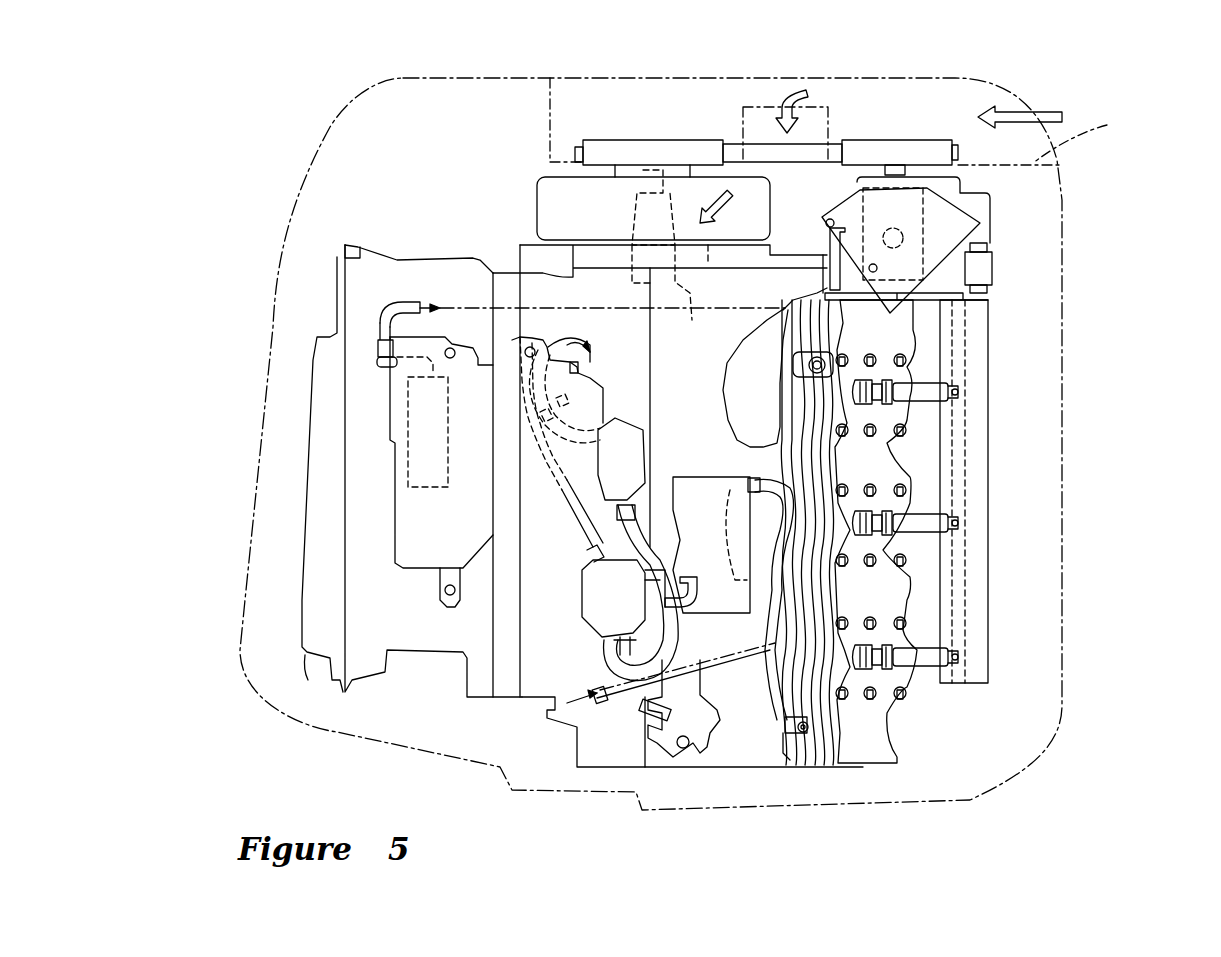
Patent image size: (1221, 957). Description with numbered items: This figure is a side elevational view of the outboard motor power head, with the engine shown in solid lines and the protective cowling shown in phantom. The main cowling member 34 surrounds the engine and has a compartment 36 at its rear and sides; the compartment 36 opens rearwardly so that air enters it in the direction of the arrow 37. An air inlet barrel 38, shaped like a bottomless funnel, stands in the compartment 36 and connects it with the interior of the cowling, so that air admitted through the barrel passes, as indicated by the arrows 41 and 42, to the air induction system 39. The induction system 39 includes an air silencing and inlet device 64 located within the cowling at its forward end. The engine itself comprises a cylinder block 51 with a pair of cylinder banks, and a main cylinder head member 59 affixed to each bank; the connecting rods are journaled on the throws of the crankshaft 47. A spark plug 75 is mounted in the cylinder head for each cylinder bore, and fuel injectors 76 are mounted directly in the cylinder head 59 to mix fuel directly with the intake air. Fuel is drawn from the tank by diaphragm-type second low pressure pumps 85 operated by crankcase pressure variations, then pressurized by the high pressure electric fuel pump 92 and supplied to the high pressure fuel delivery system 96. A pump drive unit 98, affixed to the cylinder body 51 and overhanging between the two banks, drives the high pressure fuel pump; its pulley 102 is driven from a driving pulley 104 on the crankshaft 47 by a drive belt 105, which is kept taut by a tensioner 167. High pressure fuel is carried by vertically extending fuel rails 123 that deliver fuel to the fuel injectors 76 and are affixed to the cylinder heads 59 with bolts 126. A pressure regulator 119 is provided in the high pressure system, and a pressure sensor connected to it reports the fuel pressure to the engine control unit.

The main cowling member 34 is at (1062, 373).
The compartments 36 is at (1081, 131).
The arrow 37 is at (1050, 110).
The air inlet barrel 38 is at (743, 107).
The air induction system 39 is at (447, 246).
The arrow 41 is at (797, 88).
The arrow 42 is at (730, 217).
The crankshaft 47 is at (581, 407).
The cylinder block 51 is at (767, 772).
The main cylinder head member 59 is at (887, 772).
The air silencing and inlet device 64 is at (319, 482).
The spark plug 75 is at (887, 667).
The fuel injector 76 is at (920, 647).
The second low pressure pumps 85 is at (643, 430).
The high pressure electric fuel pump 92 is at (405, 470).
The high pressure fuel delivery system 96 is at (970, 227).
The pump drive unit 98 is at (980, 183).
The pulley 102 is at (905, 150).
The driving pulley 104 is at (600, 150).
The drive belt 105 is at (782, 153).
The pressure regulator 119 is at (983, 207).
The fuel rails 123 is at (973, 683).
The bolts 126 is at (958, 452).
The tensioner 167 is at (707, 477).